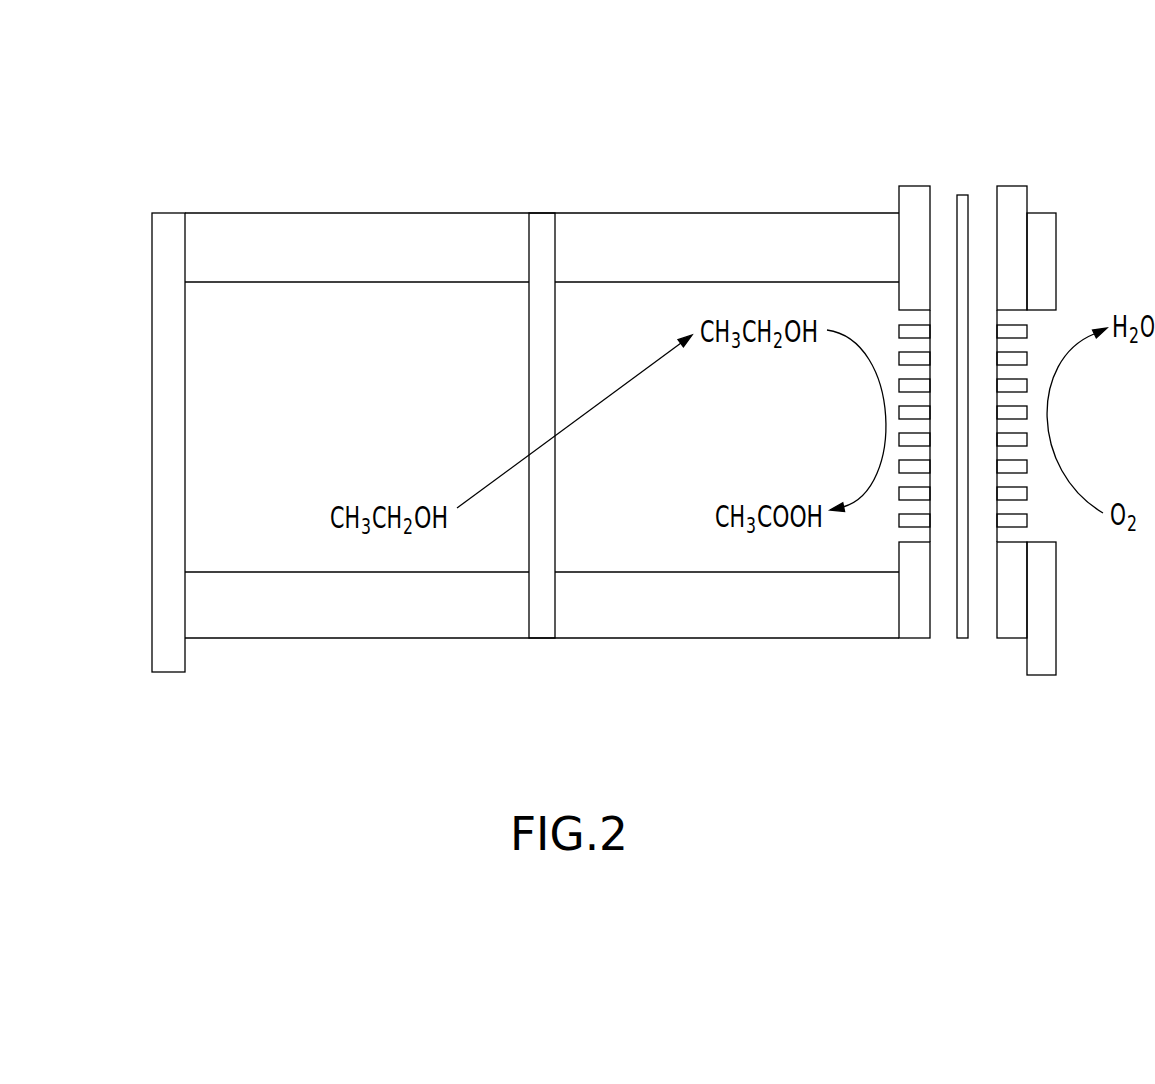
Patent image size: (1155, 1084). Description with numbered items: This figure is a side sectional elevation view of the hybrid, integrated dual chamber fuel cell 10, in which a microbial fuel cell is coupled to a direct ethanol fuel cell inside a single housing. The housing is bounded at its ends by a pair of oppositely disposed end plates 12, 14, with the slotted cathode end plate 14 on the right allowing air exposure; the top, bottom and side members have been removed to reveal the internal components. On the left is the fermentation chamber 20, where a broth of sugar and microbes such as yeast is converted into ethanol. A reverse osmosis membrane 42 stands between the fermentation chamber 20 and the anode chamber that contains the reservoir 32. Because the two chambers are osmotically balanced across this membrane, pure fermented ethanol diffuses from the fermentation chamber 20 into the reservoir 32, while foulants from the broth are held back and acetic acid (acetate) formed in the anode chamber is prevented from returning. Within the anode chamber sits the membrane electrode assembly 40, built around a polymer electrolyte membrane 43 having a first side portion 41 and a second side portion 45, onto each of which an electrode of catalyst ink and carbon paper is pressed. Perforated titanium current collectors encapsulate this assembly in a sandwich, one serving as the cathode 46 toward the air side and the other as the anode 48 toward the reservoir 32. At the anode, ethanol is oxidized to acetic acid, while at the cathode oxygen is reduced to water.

The hybrid, integrated dual chamber fuel cell 10 is at (585, 130).
The end plate 12 is at (168, 420).
The cathode end plate 14 is at (1056, 248).
The fermentation chamber 20 is at (348, 330).
The reservoir 32 is at (765, 317).
The membrane electrode assembly 40 is at (977, 684).
The first side portion 41 is at (958, 628).
The reverse osmosis membrane 42 is at (545, 618).
The polymer electrolyte membrane 43 is at (967, 193).
The second side portion 45 is at (970, 237).
The cathode current collector 46 is at (1012, 637).
The anode current collector 48 is at (913, 545).